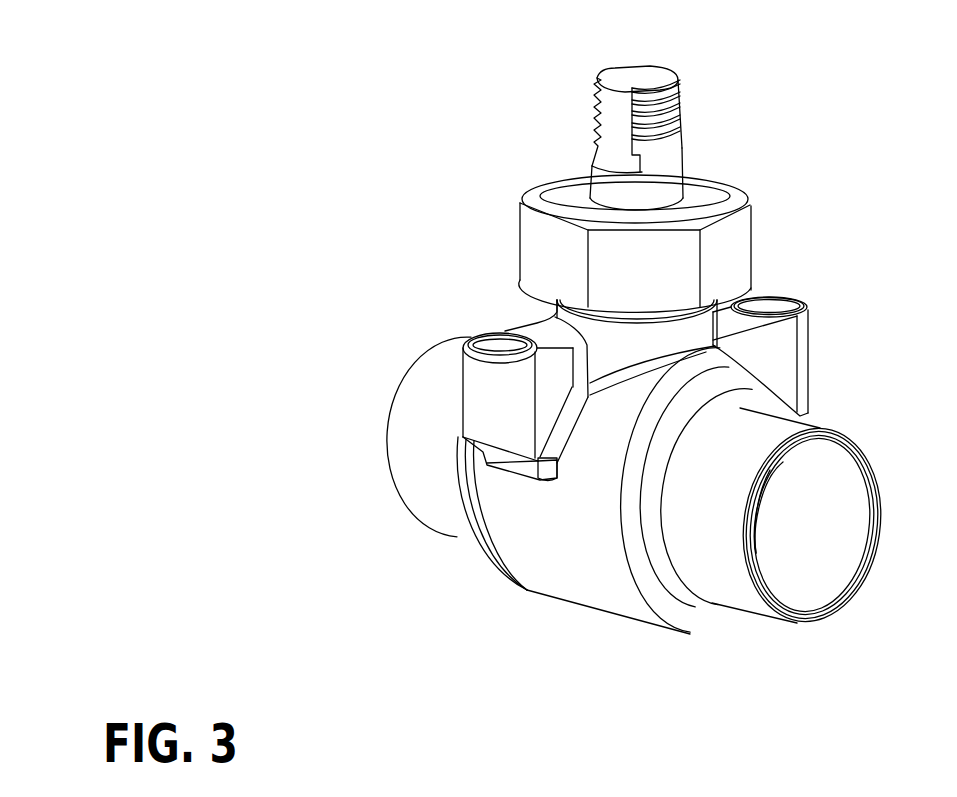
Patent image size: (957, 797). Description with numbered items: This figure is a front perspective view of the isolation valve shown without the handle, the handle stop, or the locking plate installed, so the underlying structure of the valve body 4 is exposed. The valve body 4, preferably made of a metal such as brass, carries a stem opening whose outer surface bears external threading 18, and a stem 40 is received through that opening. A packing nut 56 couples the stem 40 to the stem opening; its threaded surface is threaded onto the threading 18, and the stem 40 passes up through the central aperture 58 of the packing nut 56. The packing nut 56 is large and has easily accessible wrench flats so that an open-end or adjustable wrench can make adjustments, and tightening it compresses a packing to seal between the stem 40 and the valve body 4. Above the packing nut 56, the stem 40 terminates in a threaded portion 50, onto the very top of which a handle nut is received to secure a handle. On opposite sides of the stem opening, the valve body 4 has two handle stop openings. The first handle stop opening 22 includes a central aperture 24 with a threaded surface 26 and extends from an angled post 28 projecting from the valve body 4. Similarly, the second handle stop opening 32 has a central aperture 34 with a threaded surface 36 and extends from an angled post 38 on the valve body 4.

The valve body 4 is at (570, 543).
The threading 18 is at (553, 323).
The first handle stop opening 22 is at (490, 408).
The central aperture 24 is at (490, 337).
The threaded surface 26 is at (465, 357).
The angled post 28 is at (481, 452).
The second handle stop opening 32 is at (777, 353).
The central aperture 34 is at (767, 306).
The threaded surface 36 is at (797, 306).
The angled post 38 is at (850, 437).
The stem 40 is at (697, 161).
The threaded portion 50 is at (680, 107).
The packing nut 56 is at (722, 258).
The central aperture 58 is at (547, 190).